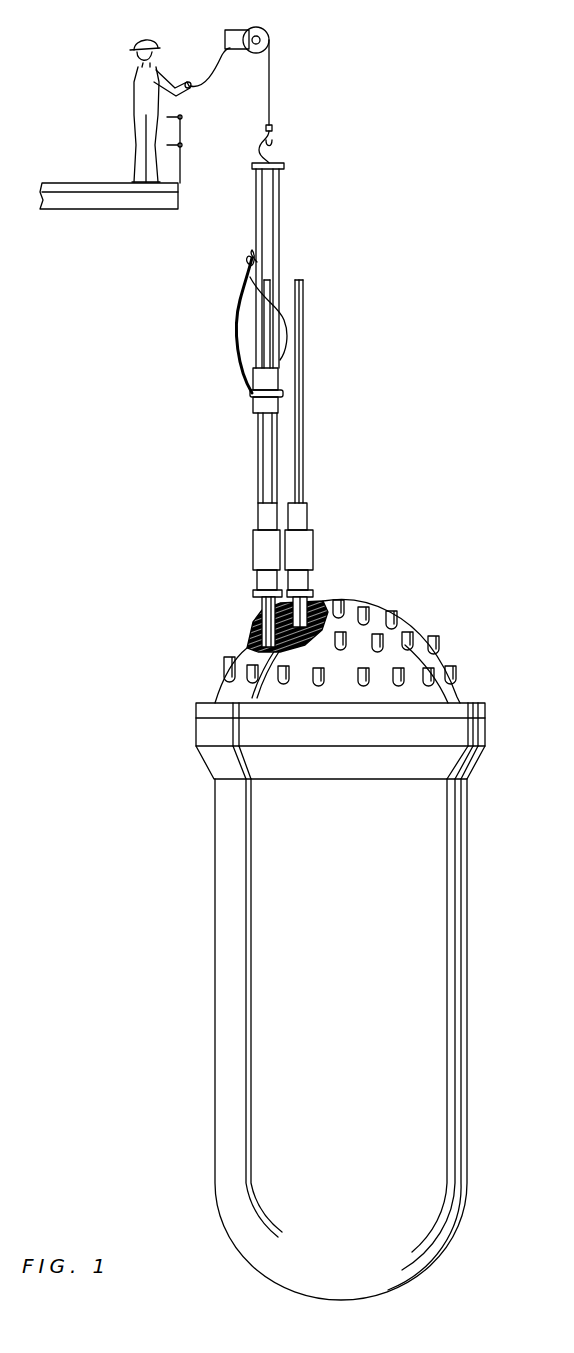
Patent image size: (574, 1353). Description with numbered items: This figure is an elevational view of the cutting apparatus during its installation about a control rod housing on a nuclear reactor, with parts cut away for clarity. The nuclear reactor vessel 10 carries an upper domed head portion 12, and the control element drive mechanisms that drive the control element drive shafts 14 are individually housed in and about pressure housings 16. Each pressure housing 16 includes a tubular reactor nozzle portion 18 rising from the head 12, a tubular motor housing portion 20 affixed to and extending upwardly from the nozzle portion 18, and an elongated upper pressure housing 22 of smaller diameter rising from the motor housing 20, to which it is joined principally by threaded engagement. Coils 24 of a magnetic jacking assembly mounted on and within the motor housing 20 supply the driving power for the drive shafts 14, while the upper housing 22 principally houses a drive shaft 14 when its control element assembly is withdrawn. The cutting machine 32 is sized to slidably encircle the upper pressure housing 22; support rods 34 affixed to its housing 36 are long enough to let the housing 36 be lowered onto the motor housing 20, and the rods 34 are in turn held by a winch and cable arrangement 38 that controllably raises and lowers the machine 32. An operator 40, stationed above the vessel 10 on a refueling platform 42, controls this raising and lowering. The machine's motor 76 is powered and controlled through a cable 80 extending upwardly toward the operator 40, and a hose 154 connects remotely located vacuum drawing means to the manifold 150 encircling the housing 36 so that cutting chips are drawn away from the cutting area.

The nuclear reactor vessel 10 is at (186, 828).
The upper domed head portion 12 is at (438, 655).
The control element drive shafts 14 is at (262, 615).
The pressure housings 16 is at (253, 492).
The tubular reactor nozzle portion 18 is at (257, 606).
The tubular motor housing portion 20 is at (261, 517).
The upper pressure housing 22 is at (262, 467).
The coils 24 is at (256, 548).
The cutting machine 32 is at (220, 382).
The rods 34 is at (262, 218).
The housing 36 is at (246, 412).
The winch and cable arrangement 38 is at (284, 52).
The operator 40 is at (130, 88).
The refueling platform 42 is at (70, 183).
The motor 76 is at (282, 363).
The cable 80 is at (285, 337).
The manifold 150 is at (250, 395).
The hose 154 is at (245, 287).